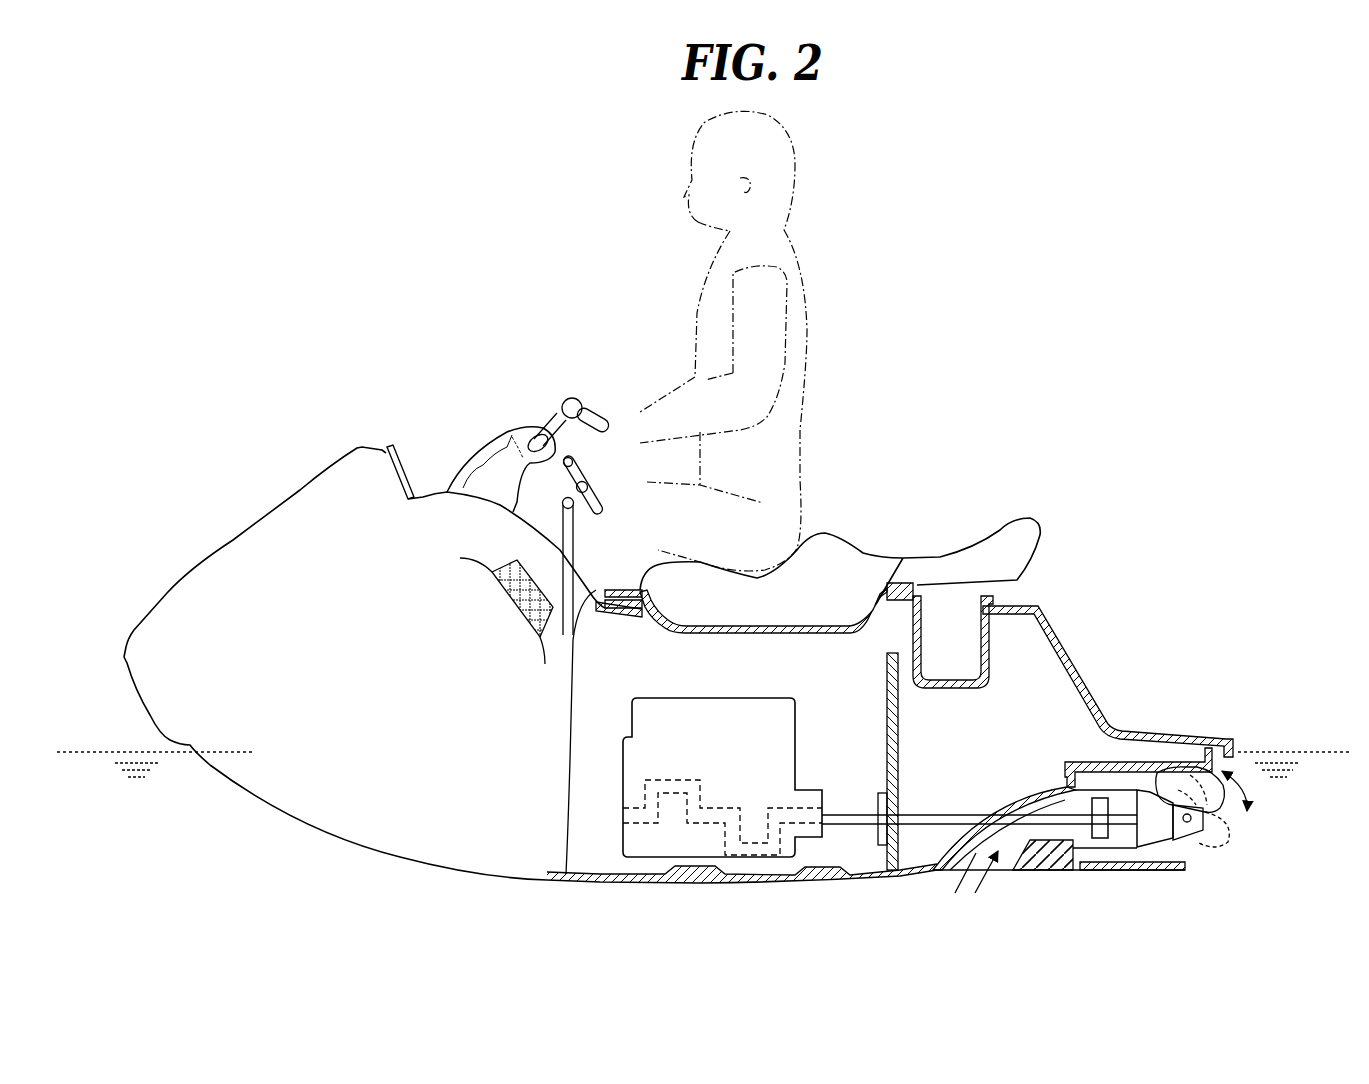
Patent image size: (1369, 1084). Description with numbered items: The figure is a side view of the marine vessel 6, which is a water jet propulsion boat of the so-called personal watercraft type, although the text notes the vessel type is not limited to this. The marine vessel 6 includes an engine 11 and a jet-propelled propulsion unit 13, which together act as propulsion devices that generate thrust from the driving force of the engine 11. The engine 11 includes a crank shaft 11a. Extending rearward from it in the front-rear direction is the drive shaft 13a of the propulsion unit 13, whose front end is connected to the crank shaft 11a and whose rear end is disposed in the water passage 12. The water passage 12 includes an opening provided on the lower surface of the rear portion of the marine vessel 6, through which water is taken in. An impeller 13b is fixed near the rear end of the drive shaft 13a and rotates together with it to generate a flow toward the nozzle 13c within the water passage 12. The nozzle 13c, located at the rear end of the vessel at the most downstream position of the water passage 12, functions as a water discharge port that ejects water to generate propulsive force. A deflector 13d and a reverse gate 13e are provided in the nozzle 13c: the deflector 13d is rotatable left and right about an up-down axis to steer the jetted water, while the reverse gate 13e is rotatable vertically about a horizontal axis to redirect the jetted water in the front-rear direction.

The marine vessel 6 is at (306, 442).
The engine 11 is at (650, 848).
The crank shaft 11a is at (765, 857).
The water passage 12 is at (1027, 852).
The propulsion unit 13 is at (1193, 849).
The drive shaft 13a is at (930, 818).
The impeller 13b is at (1101, 836).
The nozzle 13c is at (1160, 828).
The deflector 13d is at (1192, 834).
The reverse gate 13e is at (1187, 807).